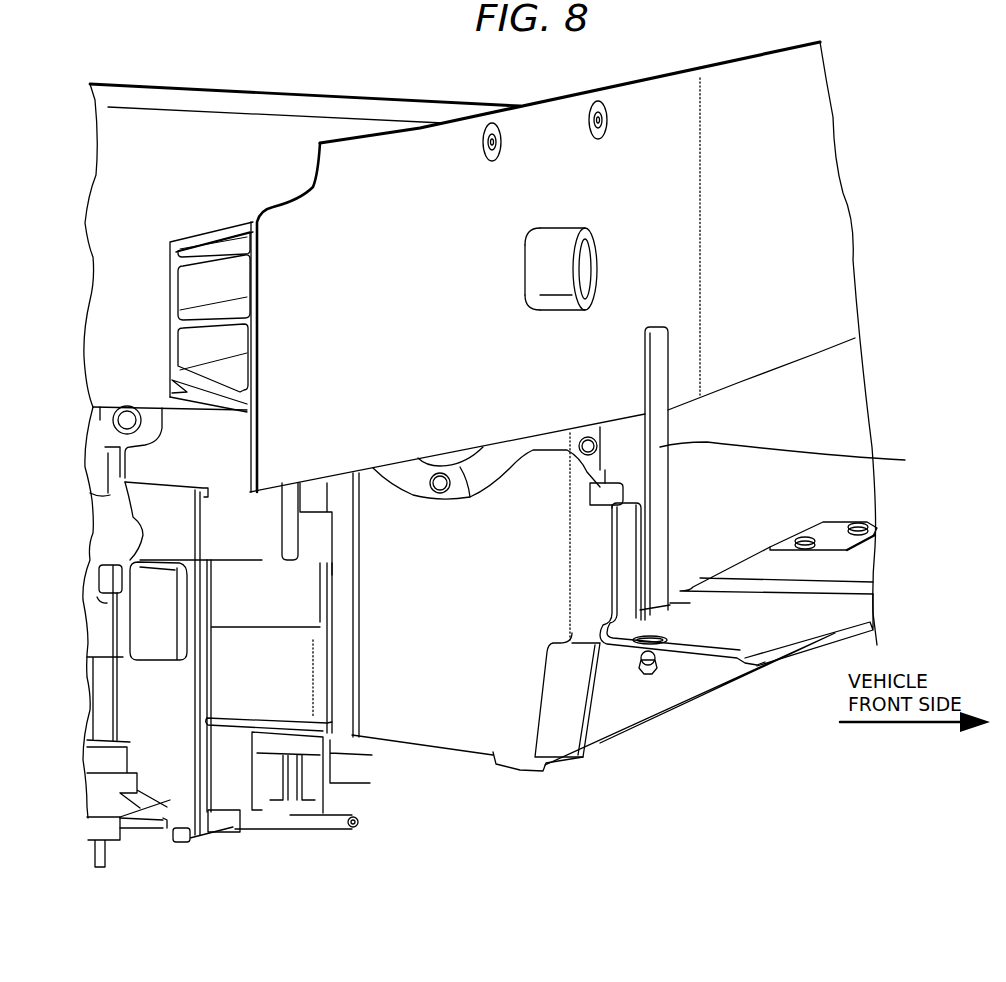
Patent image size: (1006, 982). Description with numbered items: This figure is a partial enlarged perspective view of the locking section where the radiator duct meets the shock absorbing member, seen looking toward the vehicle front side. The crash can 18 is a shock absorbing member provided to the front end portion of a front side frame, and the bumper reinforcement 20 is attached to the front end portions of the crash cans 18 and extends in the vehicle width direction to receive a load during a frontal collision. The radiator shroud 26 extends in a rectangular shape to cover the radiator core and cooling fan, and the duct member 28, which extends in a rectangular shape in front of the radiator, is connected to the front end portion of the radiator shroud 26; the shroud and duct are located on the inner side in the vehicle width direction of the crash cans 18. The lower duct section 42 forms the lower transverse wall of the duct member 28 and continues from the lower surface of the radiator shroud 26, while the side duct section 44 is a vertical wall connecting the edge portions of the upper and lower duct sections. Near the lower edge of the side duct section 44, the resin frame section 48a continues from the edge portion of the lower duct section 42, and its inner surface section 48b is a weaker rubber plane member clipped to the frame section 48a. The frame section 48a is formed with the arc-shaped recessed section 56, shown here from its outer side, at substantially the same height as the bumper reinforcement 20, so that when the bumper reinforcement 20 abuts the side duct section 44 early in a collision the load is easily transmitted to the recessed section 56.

The crash can 18 is at (212, 88).
The bumper reinforcement 20 is at (628, 114).
The radiator shroud 26 is at (243, 687).
The duct member 28 is at (515, 782).
The lower duct section 42 is at (777, 622).
The side duct section 44 is at (423, 708).
The frame section 48a is at (499, 465).
The inner surface section 48b is at (404, 535).
The recessed section 56 is at (468, 480).